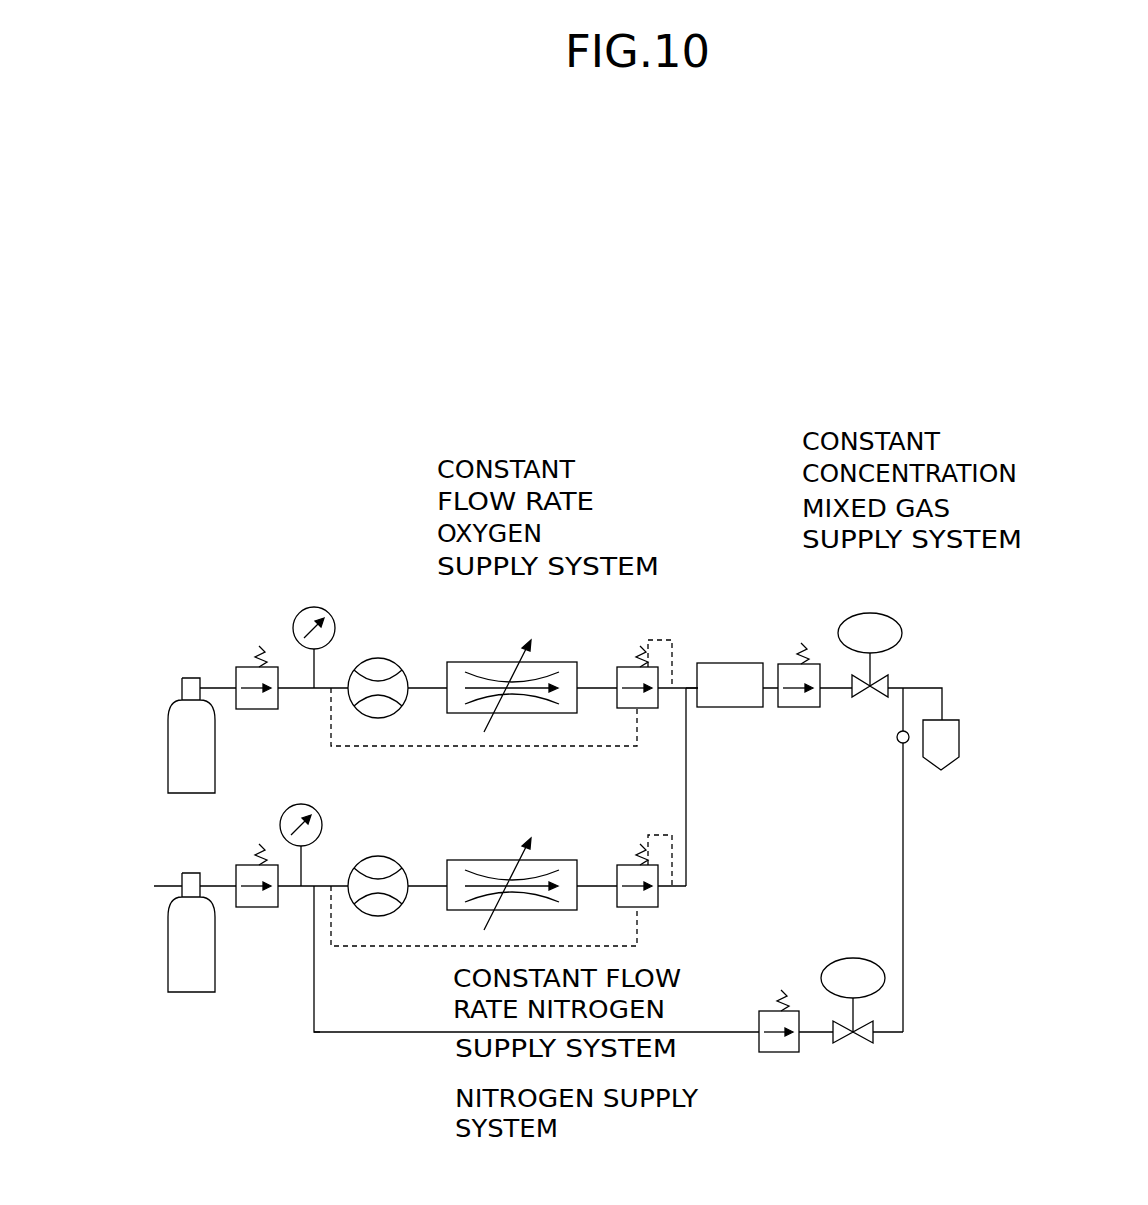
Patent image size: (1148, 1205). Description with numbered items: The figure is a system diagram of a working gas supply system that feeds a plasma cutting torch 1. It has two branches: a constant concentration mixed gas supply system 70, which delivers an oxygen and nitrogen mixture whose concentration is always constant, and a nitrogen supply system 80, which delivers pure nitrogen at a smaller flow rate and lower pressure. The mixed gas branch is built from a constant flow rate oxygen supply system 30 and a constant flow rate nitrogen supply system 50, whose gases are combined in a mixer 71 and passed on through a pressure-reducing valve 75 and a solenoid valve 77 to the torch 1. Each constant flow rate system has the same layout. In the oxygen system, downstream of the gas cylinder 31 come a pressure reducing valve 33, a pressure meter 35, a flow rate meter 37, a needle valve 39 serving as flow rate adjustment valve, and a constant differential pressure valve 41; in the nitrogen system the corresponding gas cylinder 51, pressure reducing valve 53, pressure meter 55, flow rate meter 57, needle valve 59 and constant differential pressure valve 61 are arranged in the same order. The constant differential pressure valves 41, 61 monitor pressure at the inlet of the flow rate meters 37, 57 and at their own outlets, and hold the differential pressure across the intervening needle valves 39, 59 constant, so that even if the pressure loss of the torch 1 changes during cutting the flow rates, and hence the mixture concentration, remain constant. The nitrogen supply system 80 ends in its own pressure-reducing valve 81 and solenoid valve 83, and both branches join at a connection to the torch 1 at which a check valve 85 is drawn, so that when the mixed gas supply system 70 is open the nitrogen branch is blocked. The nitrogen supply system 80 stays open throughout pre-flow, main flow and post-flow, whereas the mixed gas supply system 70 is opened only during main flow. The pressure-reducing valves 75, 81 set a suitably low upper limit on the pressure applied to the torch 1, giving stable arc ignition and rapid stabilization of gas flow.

The torch 1 is at (937, 771).
The constant flow rate oxygen supply system 30 is at (378, 603).
The gas cylinder 31 is at (215, 742).
The pressure reducing valve 33 is at (242, 667).
The pressure meter 35 is at (313, 607).
The flow rate meter 37 is at (381, 659).
The needle valve 39 is at (470, 662).
The constant differential pressure valve 41 is at (626, 667).
The constant flow rate nitrogen supply system 50 is at (374, 953).
The gas cylinder 51 is at (215, 968).
The pressure reducing valve 53 is at (262, 907).
The pressure meter 55 is at (316, 808).
The flow rate meter 57 is at (395, 859).
The needle valve 59 is at (470, 860).
The constant differential pressure valve 61 is at (626, 865).
The constant concentration mixed gas supply system 70 is at (745, 559).
The mixer 71 is at (731, 663).
The pressure-reducing valve 75 is at (787, 664).
The solenoid valve 77 is at (901, 621).
The nitrogen supply system 80 is at (375, 1047).
The pressure-reducing valve 81 is at (770, 1011).
The solenoid valve 83 is at (848, 958).
The check valve 85 is at (896, 737).